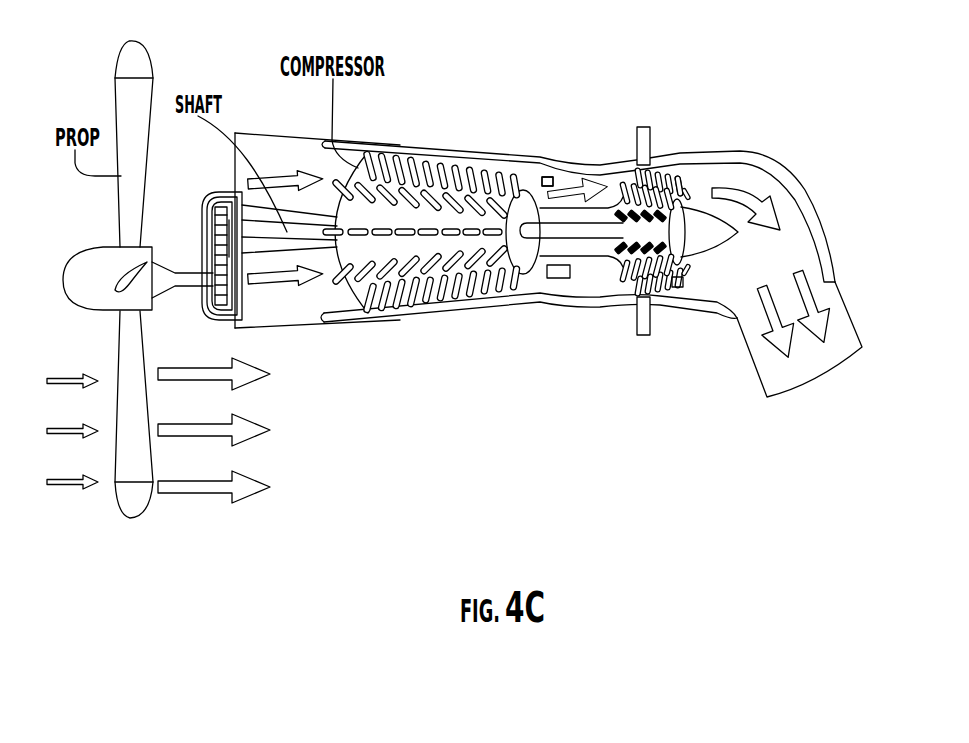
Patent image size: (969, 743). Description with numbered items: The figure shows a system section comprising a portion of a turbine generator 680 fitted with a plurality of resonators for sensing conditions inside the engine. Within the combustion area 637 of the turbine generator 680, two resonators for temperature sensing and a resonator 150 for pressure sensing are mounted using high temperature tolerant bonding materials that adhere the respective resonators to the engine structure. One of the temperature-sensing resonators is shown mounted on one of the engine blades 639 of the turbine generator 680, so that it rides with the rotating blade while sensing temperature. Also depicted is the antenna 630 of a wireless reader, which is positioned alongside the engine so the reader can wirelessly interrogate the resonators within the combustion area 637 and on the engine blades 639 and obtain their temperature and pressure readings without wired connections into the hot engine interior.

The antenna 630 is at (640, 141).
The engine blades 639 is at (679, 184).
The resonator 150 is at (558, 278).
The combustion area 637 is at (593, 275).
The turbine generator 680 is at (367, 436).